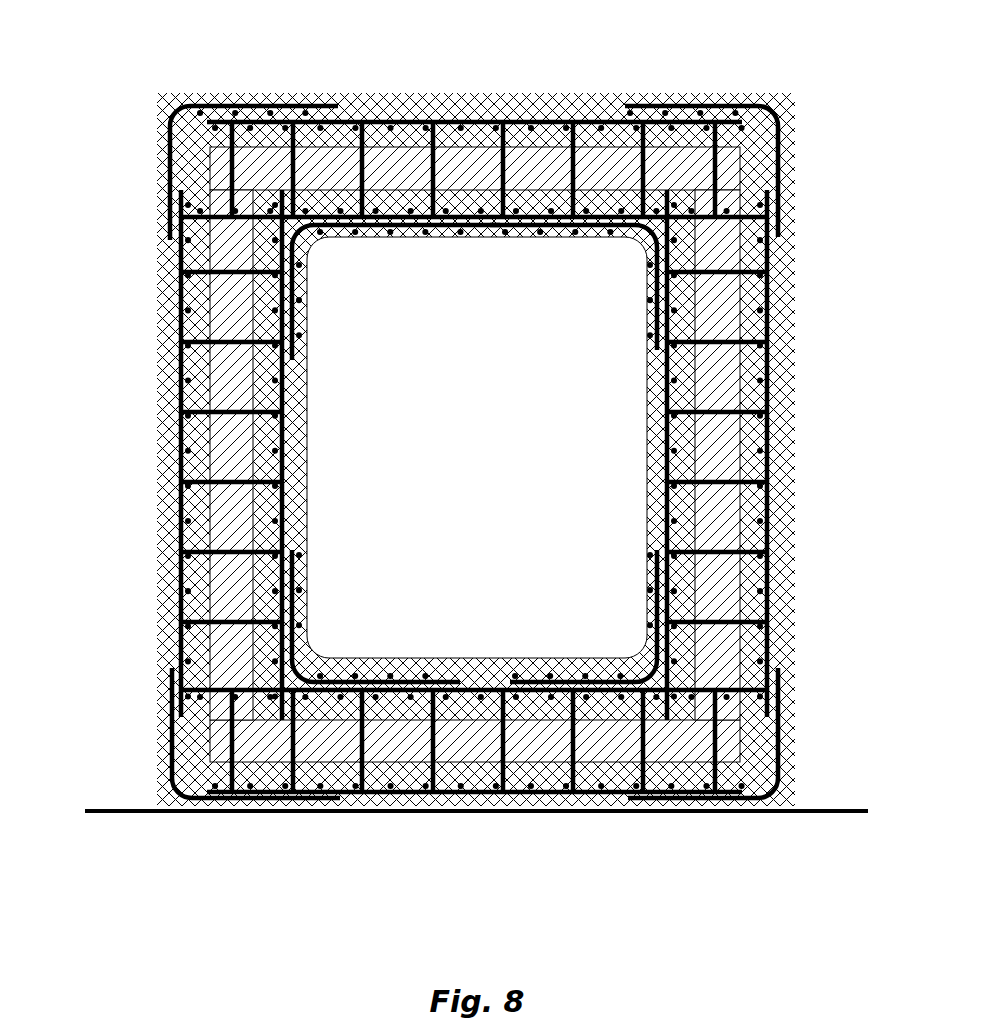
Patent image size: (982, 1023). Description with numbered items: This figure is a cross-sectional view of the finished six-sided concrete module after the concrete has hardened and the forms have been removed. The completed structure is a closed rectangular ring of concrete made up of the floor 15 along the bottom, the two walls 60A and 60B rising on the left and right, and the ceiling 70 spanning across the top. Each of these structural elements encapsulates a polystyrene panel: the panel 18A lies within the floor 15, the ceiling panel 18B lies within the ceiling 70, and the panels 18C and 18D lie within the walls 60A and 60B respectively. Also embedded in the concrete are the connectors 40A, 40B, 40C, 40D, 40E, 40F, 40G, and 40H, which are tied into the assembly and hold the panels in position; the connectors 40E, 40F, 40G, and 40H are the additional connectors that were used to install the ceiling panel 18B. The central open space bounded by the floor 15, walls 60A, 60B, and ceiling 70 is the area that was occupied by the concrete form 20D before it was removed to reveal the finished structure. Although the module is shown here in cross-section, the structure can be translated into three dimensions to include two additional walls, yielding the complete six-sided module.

The floor 15 is at (583, 812).
The polystyrene panel 18A is at (493, 690).
The ceiling panel 18B is at (475, 233).
The polystyrene panel 18C is at (293, 437).
The polystyrene panel 18D is at (648, 437).
The concrete form 20D is at (627, 367).
The connector 40A is at (167, 743).
The connector 40B is at (785, 804).
The connector 40C is at (307, 632).
The connector 40D is at (657, 632).
The connector 40E is at (303, 247).
The connector 40F is at (633, 238).
The connector 40G is at (233, 107).
The connector 40H is at (730, 102).
The wall 60A is at (160, 395).
The wall 60B is at (789, 403).
The ceiling 70 is at (483, 100).